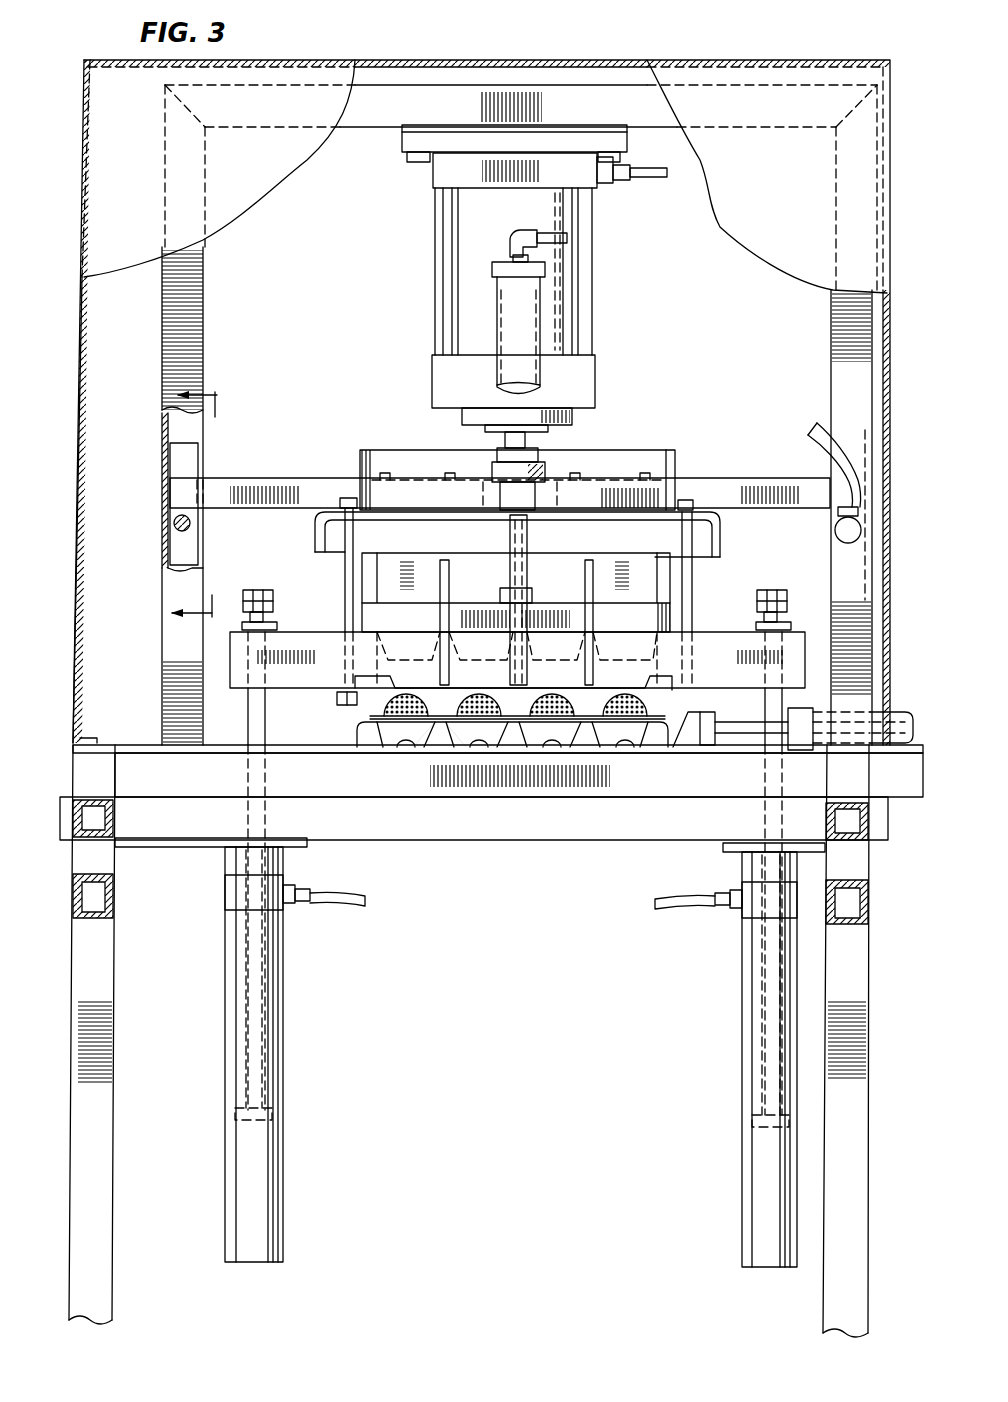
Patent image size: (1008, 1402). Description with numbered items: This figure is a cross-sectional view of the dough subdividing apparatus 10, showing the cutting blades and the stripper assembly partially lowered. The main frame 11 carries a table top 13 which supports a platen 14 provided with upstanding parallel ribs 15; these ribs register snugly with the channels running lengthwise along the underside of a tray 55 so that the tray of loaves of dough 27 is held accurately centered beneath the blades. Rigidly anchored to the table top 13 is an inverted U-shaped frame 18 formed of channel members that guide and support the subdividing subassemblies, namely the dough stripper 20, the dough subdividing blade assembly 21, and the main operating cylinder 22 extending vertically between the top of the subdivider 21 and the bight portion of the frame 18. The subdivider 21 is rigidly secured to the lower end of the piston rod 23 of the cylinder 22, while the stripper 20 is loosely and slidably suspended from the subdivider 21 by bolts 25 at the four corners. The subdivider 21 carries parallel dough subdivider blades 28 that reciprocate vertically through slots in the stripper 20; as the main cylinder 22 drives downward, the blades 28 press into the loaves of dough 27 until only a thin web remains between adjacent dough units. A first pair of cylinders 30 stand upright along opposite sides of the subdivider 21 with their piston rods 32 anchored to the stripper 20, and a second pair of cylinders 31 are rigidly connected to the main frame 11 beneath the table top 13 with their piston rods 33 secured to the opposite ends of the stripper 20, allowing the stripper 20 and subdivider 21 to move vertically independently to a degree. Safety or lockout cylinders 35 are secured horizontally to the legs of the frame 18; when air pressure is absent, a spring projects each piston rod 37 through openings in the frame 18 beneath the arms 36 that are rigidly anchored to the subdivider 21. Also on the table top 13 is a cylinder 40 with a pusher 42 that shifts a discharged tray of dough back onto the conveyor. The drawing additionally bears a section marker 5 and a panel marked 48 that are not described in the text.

The dough subdividing apparatus 10 is at (778, 58).
The main frame 11 is at (187, 847).
The table top 13 is at (124, 743).
The platen 14 is at (357, 728).
The upstanding parallel ribs 15 is at (445, 732).
The inverted U-shaped frame 18 is at (203, 306).
The dough stripper 20 is at (702, 638).
The dough subdividing blade assembly 21 is at (312, 522).
The main operating cylinder 22 is at (534, 286).
The piston rod 23 is at (527, 440).
The bolts 25 is at (345, 575).
The loaves of dough 27 is at (470, 700).
The dough subdivider blades 28 is at (398, 593).
The first pair of cylinders 30 is at (535, 312).
The second pair of cylinders 31 is at (285, 1000).
The piston rods 32 is at (508, 534).
The piston rods 33 is at (262, 720).
The safety or lockout cylinders 35 is at (835, 530).
The arms 36 is at (290, 478).
The piston rod 37 is at (176, 524).
The cylinder 40 is at (900, 712).
The pusher 42 is at (706, 745).
The housing panels 48 is at (270, 188).
The tray 55 is at (556, 735).
The section line 5 is at (209, 507).